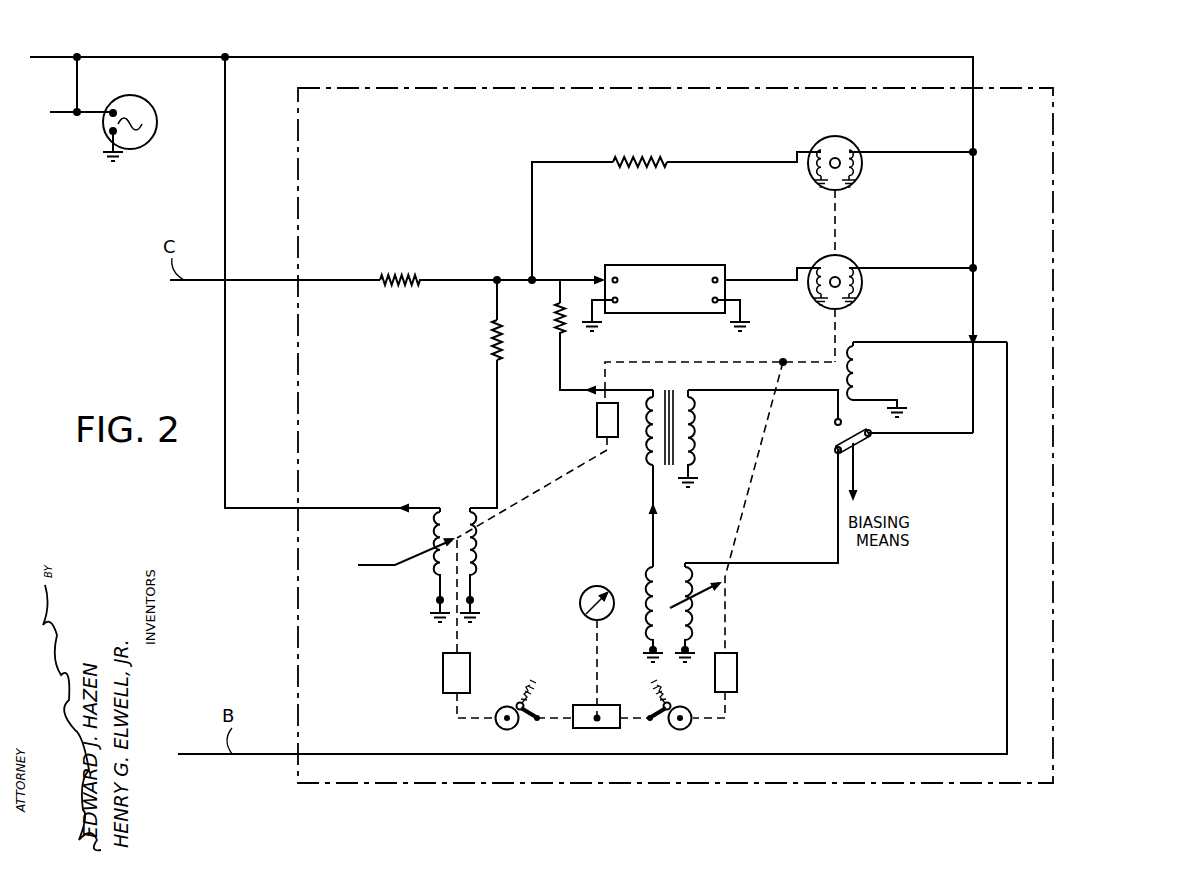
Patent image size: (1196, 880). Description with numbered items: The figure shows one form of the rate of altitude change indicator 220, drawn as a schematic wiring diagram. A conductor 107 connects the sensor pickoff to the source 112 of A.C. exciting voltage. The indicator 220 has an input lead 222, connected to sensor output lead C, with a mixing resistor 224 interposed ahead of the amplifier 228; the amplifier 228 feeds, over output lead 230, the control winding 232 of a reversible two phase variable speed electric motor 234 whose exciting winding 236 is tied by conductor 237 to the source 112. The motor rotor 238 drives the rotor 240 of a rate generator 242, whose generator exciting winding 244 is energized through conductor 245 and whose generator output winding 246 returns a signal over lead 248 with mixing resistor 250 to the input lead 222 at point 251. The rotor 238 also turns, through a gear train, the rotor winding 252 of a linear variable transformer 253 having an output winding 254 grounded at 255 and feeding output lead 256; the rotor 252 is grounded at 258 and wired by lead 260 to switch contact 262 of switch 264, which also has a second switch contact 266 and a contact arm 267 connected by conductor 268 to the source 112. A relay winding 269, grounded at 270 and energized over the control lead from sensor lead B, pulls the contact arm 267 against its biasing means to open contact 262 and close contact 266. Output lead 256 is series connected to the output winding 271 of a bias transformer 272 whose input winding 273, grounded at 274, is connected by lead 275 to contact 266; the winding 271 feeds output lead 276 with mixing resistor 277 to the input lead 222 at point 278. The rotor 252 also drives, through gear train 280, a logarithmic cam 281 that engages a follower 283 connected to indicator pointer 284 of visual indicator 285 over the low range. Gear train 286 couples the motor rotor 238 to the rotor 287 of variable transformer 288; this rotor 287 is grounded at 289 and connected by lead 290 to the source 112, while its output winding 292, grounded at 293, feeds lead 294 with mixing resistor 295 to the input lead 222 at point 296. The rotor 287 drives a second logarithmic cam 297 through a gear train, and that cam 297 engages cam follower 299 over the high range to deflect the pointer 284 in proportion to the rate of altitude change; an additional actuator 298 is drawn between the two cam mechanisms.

The conductor 107 is at (39, 60).
The source of A.C. exciting voltage 112 is at (150, 103).
The indicator 220 is at (1062, 192).
The input lead 222 is at (363, 283).
The mixing resistor 224 is at (403, 290).
The amplifier 228 is at (666, 298).
The output lead 230 is at (760, 280).
The control winding 232 is at (814, 284).
The reversible two phase variable speed electric motor 234 is at (820, 261).
The exciting winding 236 is at (852, 288).
The conductor 237 is at (394, 59).
The motor rotor 238 is at (840, 278).
The rotor 240 is at (840, 160).
The rate generator 242 is at (810, 144).
The generator exciting winding 244 is at (852, 167).
The conductor 245 is at (923, 154).
The generator output winding 246 is at (815, 170).
The lead 248 is at (707, 162).
The mixing resistor 250 is at (632, 159).
The point / gear train 251 is at (532, 280).
The rotor winding 252 is at (725, 604).
The linear variable transformer 253 is at (648, 569).
The output winding 254 is at (646, 599).
The ground 255 is at (651, 652).
The output lead 256 is at (652, 531).
The ground 258 is at (686, 656).
The lead 260 is at (835, 528).
The switch contact 262 is at (832, 454).
The switch 264 is at (861, 441).
The second switch contact 266 is at (834, 420).
The contact arm 267 is at (833, 442).
The conductor 268 is at (910, 434).
The relay winding 269 is at (862, 366).
The ground 270 is at (892, 402).
The output winding 271 is at (645, 446).
The bias transformer 272 is at (669, 481).
The input winding 273 is at (691, 432).
The ground 274 is at (694, 478).
The lead 275 is at (695, 388).
The output lead 276 is at (615, 390).
The mixing resistor 277 is at (554, 324).
The point 278 is at (560, 280).
The gear train 280 is at (740, 680).
The logarithmic cam 281 is at (690, 726).
The follower 283 is at (672, 726).
The indicator pointer 284 is at (606, 617).
The visual indicator 285 is at (587, 589).
The gear train 286 is at (597, 432).
The rotor 287 is at (432, 536).
The variable transformer 288 is at (390, 554).
The ground 289 is at (432, 600).
The lead 290 is at (225, 204).
The output winding 292 is at (482, 561).
The ground 293 is at (478, 600).
The lead 294 is at (495, 454).
The mixing resistor 295 is at (490, 341).
The point / gear train 296 is at (497, 280).
The logarithmic cam 297 is at (504, 726).
The actuator 298 is at (588, 728).
The cam follower 299 is at (538, 723).